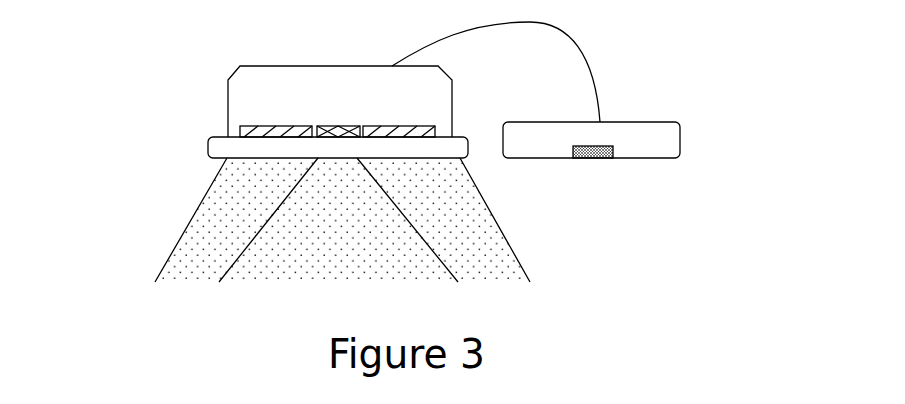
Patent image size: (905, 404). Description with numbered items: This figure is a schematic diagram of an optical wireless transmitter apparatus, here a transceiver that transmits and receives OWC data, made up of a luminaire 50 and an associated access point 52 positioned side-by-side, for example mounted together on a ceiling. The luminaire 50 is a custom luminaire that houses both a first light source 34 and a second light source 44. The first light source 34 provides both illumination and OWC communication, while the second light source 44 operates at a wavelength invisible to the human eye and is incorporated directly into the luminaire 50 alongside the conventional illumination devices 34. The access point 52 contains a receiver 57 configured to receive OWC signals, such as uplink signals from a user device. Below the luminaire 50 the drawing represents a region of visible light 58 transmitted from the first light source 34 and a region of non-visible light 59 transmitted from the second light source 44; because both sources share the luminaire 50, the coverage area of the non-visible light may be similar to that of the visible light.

The luminaire 50 is at (342, 75).
The first light source 34 is at (253, 127).
The second light source 44 is at (340, 128).
The access point 52 is at (652, 137).
The receiver 57 is at (593, 153).
The region of visible light 58 is at (480, 258).
The region of non-visible light 59 is at (358, 258).